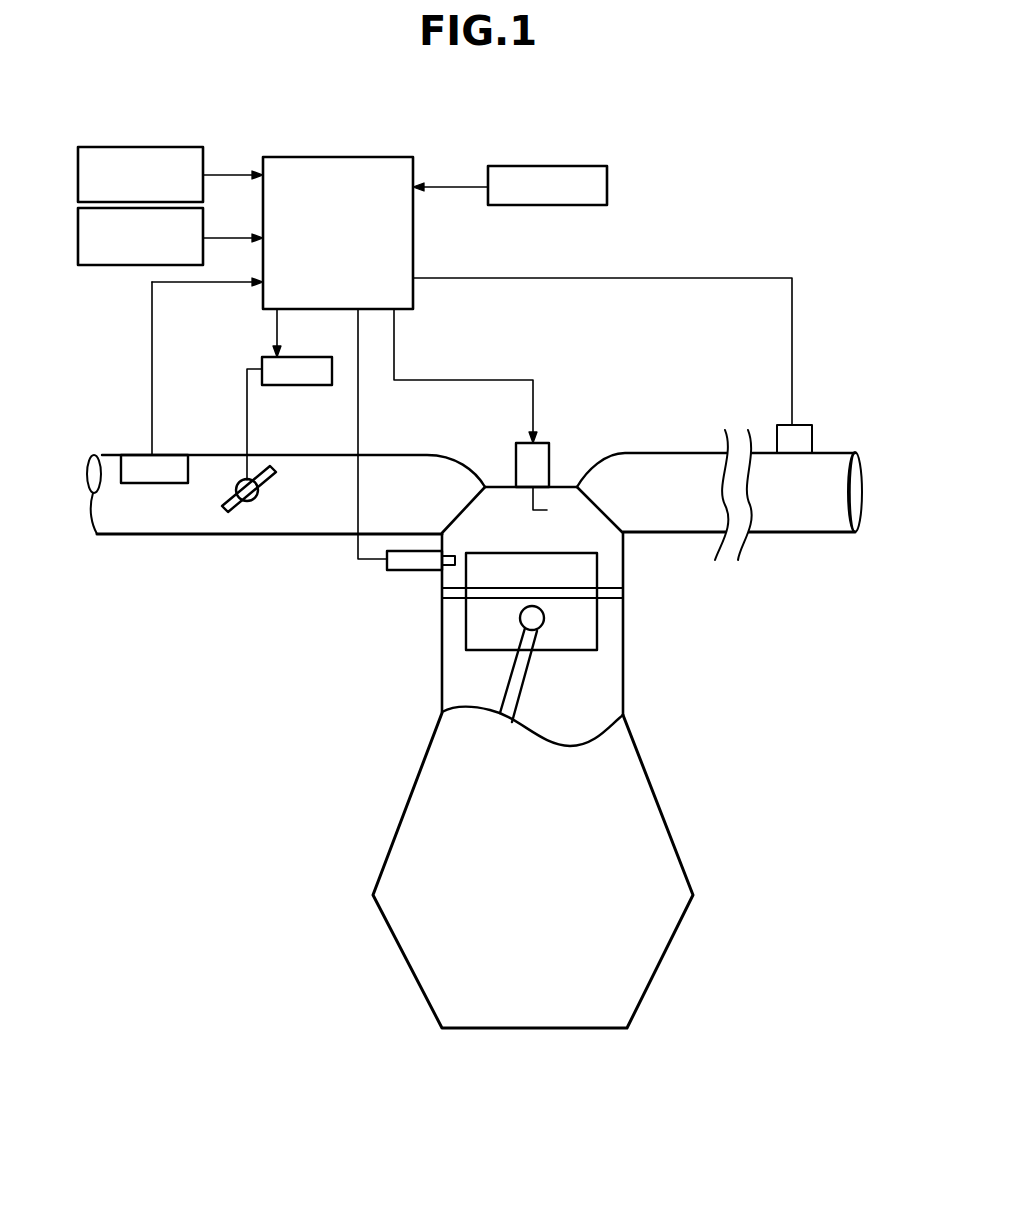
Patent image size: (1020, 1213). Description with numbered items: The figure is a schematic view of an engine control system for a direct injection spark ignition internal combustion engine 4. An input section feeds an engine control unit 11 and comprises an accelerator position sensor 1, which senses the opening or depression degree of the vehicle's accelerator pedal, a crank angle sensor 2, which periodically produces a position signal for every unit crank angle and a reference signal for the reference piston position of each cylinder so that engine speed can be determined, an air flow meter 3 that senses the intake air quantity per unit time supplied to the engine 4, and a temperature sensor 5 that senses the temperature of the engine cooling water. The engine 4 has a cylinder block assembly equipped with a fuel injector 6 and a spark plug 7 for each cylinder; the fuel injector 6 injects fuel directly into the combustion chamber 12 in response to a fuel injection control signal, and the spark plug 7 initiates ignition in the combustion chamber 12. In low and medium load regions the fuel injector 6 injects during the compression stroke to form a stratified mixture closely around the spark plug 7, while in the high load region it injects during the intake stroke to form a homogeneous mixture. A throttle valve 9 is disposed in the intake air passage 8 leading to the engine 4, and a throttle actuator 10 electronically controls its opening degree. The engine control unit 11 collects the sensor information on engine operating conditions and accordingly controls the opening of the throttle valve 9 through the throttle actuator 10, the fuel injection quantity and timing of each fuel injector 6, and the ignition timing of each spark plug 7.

The accelerator position sensor 1 is at (178, 147).
The crank angle sensor 2 is at (112, 267).
The air flow meter 3 is at (168, 455).
The internal combustion engine 4 is at (637, 677).
The temperature sensor 5 is at (607, 188).
The fuel injector 6 is at (412, 572).
The spark plug 7 is at (549, 460).
The intake air passage 8 is at (208, 455).
The throttle valve 9 is at (262, 492).
The throttle actuator 10 is at (288, 385).
The engine control unit 11 is at (413, 263).
The combustion chamber 12 is at (607, 573).